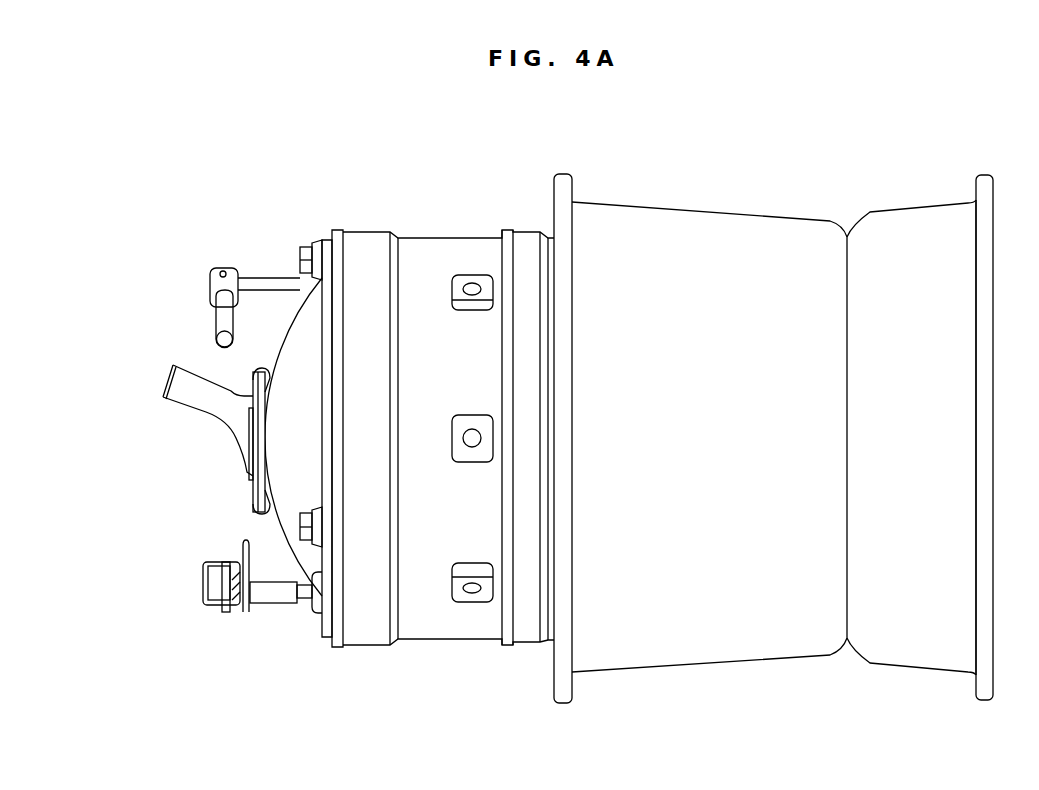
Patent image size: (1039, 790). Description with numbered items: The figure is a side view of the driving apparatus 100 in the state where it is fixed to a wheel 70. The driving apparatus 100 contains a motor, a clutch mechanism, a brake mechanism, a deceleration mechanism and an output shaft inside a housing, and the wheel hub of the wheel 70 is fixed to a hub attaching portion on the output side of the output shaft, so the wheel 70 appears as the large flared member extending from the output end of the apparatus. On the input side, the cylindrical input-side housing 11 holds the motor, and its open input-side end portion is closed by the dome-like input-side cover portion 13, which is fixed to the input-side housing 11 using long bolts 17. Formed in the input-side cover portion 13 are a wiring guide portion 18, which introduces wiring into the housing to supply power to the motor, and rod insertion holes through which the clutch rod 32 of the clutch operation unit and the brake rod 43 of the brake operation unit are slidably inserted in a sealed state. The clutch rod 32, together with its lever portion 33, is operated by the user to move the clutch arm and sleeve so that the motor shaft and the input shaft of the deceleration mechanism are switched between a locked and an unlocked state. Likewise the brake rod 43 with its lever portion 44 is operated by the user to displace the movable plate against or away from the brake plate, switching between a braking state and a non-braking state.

The input-side housing 11 is at (443, 247).
The input-side cover portion 13 is at (250, 474).
The long bolts 17 is at (303, 245).
The wiring guide portion 18 is at (190, 400).
The clutch rod 32 is at (262, 278).
The lever portion 33 is at (218, 325).
The brake rod 43 is at (272, 602).
The lever portion 44 is at (203, 565).
The wheel 70 is at (764, 658).
The driving apparatus 100 is at (570, 457).